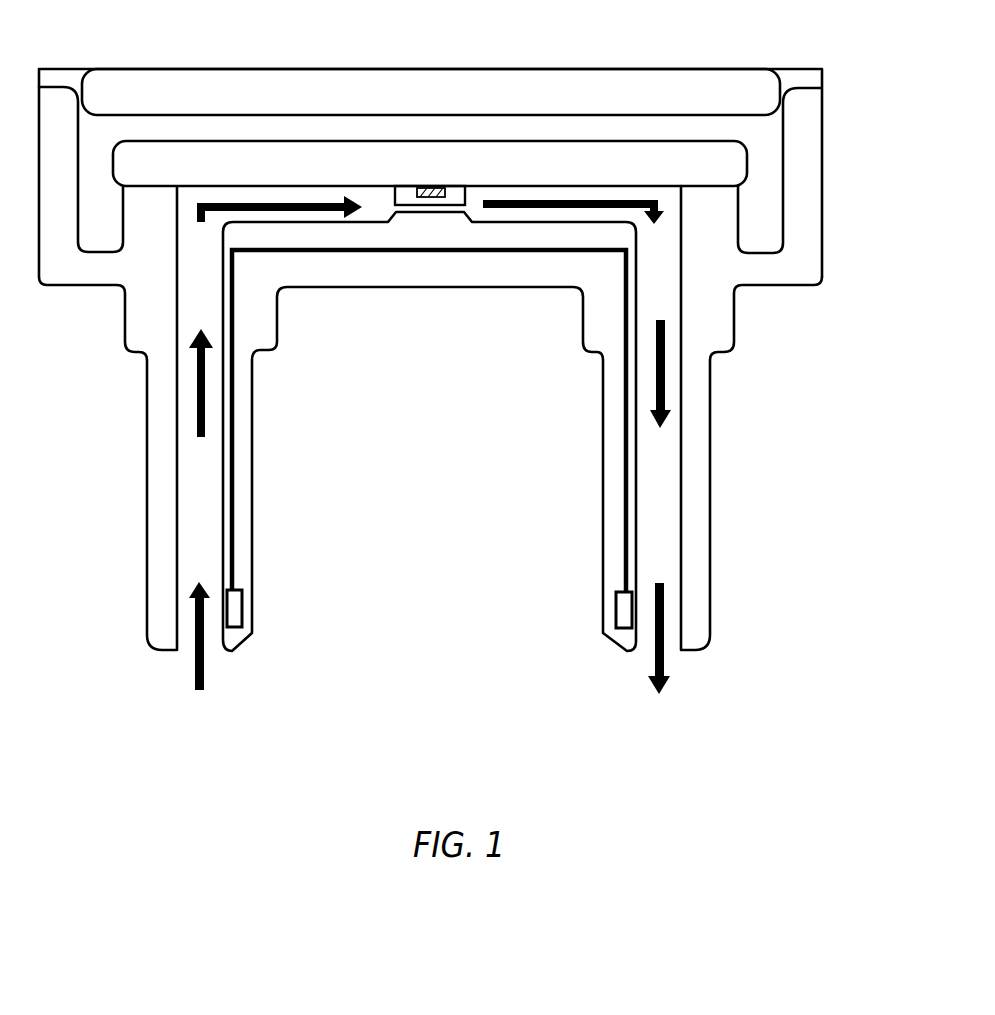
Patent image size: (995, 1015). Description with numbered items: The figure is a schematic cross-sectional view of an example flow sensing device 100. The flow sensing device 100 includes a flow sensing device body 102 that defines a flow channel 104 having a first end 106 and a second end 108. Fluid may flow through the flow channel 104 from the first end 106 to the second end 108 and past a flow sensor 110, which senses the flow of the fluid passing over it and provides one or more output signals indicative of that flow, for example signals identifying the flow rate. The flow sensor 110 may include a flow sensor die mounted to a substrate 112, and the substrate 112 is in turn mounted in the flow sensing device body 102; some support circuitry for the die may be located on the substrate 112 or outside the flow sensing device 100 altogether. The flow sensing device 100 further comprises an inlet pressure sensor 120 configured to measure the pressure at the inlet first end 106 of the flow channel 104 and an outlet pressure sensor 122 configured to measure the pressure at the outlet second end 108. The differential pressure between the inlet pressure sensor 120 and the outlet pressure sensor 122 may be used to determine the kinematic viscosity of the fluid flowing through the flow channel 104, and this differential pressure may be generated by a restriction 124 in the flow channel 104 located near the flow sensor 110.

The flow sensing device 100 is at (825, 52).
The flow sensing device body 102 is at (143, 321).
The flow channel 104 is at (190, 533).
The first end 106 is at (201, 652).
The second end 108 is at (661, 657).
The flow sensor 110 is at (446, 189).
The substrate 112 is at (752, 166).
The inlet pressure sensor 120 is at (243, 613).
The outlet pressure sensor 122 is at (617, 615).
The restriction 124 is at (433, 208).